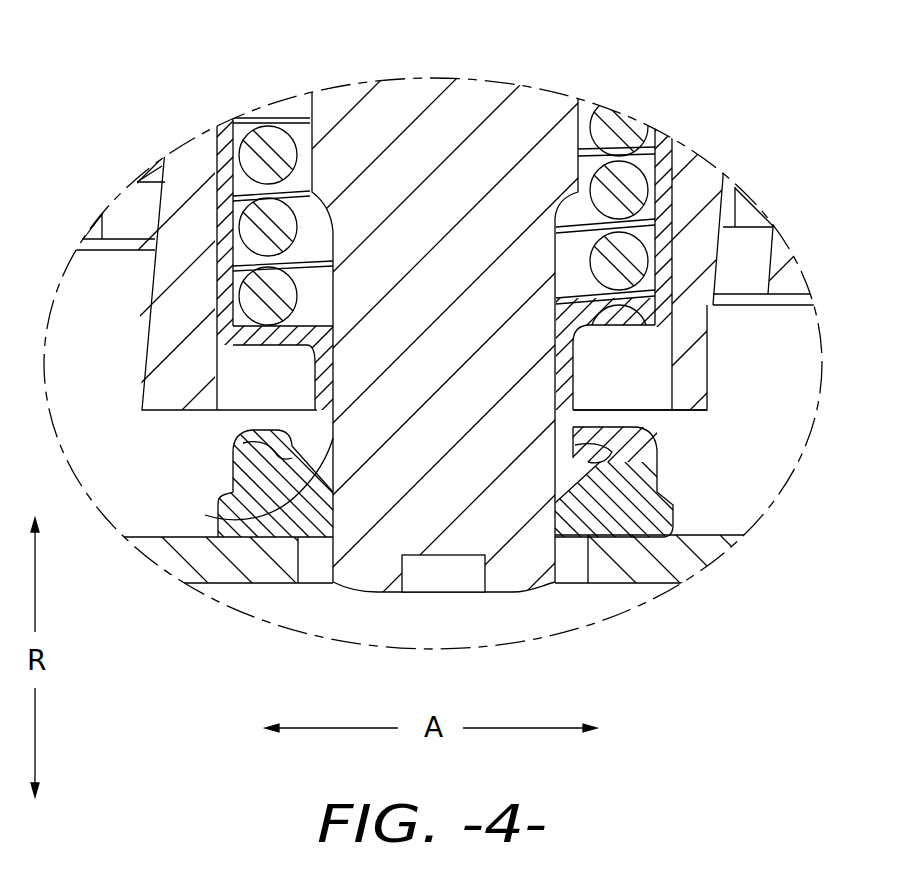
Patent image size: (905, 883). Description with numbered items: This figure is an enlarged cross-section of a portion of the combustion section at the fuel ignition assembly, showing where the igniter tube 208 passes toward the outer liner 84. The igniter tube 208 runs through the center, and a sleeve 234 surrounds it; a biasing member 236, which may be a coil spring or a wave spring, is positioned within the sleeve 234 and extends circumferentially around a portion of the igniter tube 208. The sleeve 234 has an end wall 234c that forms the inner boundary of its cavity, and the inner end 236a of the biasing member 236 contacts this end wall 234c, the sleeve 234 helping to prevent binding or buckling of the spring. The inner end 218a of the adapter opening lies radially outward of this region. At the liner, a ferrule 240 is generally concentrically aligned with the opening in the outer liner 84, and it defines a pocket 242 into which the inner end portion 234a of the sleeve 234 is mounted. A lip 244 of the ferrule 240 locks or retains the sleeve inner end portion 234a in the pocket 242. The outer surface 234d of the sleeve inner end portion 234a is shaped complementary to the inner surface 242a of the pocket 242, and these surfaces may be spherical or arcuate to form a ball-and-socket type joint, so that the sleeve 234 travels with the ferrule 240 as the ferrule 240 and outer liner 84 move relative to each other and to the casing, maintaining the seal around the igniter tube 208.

The igniter tube 208 is at (437, 118).
The sleeve 234 is at (226, 140).
The biasing member 236 is at (265, 152).
The inner end of the biasing member 236a is at (652, 297).
The inner end portion of the sleeve 234a is at (325, 392).
The end wall of the sleeve 234c is at (632, 337).
The inner end of the opening 218a is at (642, 397).
The pocket 242 is at (268, 448).
The inner surface of the pocket 242a is at (283, 443).
The outer surface of the sleeve inner end portion 234d is at (205, 515).
The lip 244 is at (643, 425).
The ferrule 240 is at (637, 511).
The outer liner 84 is at (673, 560).